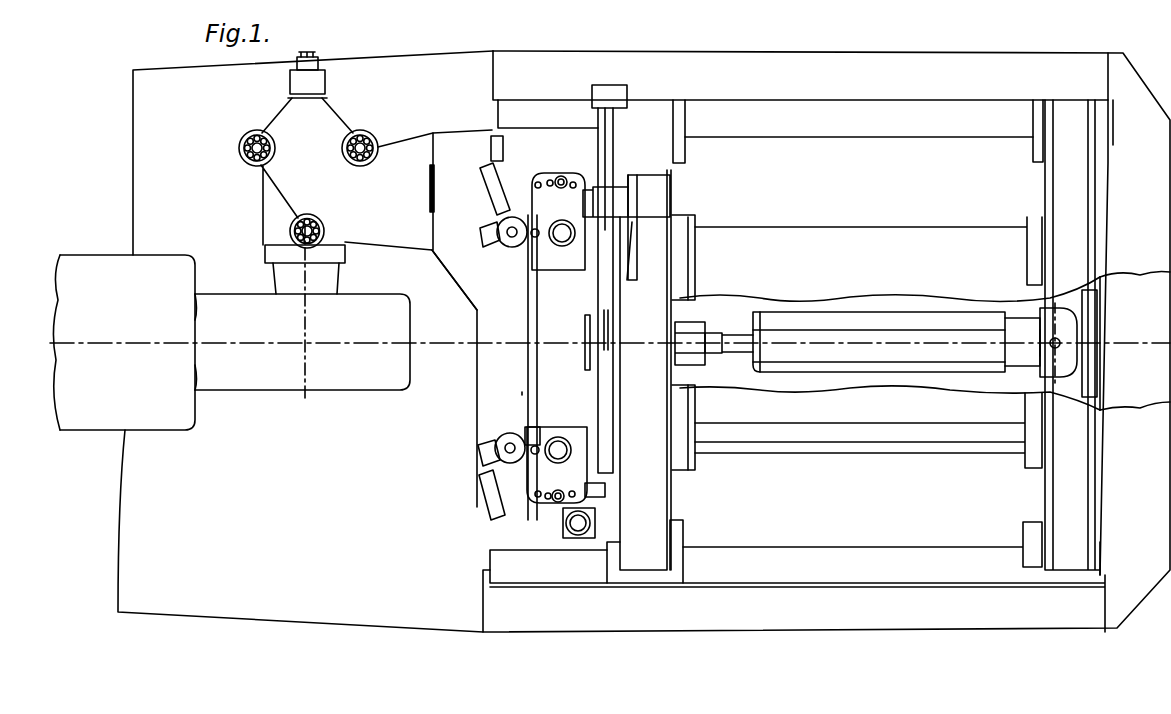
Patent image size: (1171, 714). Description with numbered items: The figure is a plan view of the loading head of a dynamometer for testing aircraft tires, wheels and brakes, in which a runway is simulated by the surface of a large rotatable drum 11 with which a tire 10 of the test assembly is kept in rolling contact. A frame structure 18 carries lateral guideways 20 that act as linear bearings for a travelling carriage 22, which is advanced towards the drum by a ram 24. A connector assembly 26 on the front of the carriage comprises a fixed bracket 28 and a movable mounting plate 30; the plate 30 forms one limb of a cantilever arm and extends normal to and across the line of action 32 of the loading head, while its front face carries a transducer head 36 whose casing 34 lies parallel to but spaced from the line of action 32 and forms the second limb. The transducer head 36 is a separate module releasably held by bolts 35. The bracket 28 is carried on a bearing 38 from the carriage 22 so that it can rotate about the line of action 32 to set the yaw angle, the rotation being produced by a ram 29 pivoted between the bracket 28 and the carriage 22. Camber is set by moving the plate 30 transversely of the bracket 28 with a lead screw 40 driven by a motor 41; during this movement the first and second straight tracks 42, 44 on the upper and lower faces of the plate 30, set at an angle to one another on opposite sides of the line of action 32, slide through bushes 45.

The tire 10 is at (263, 372).
The rotatable drum 11 is at (103, 412).
The frame structure 18 is at (1152, 384).
The lateral guideways 20 is at (857, 60).
The travelling carriage 22 is at (685, 166).
The ram 24 is at (878, 325).
The connector assembly 26 is at (532, 150).
The bracket 28 is at (576, 412).
The ram 29 is at (620, 128).
The mounting plate 30 is at (462, 297).
The line of action 32 is at (1162, 340).
The casing 34 is at (410, 204).
The bolts 35 is at (500, 136).
The transducer head 36 is at (393, 128).
The bearing 38 is at (607, 410).
The lead screw 40 is at (607, 490).
The motor 41 is at (563, 540).
The first straight tracks 42 is at (522, 272).
The second straight tracks 44 is at (522, 392).
The bushes 45 is at (503, 230).